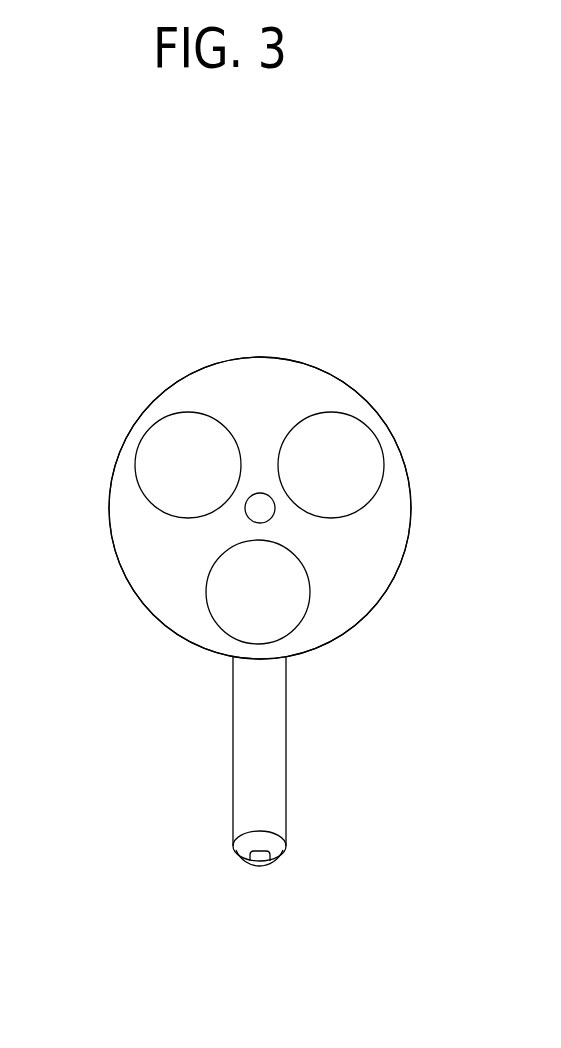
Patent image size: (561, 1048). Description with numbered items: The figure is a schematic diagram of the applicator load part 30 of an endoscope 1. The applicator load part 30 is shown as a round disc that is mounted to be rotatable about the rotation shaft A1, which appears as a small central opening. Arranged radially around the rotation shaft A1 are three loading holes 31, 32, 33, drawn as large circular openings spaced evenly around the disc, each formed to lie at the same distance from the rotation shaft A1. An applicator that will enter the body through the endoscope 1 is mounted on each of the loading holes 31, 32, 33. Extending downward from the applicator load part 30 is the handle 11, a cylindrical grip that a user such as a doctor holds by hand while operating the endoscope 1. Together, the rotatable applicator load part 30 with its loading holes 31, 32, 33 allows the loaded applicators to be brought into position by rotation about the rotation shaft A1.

The endoscope 1 is at (253, 222).
The applicator load part 30 is at (257, 367).
The loading hole 31 is at (373, 470).
The loading hole 32 is at (148, 470).
The loading hole 33 is at (298, 620).
The rotation shaft A1 is at (265, 513).
The handle 11 is at (268, 783).